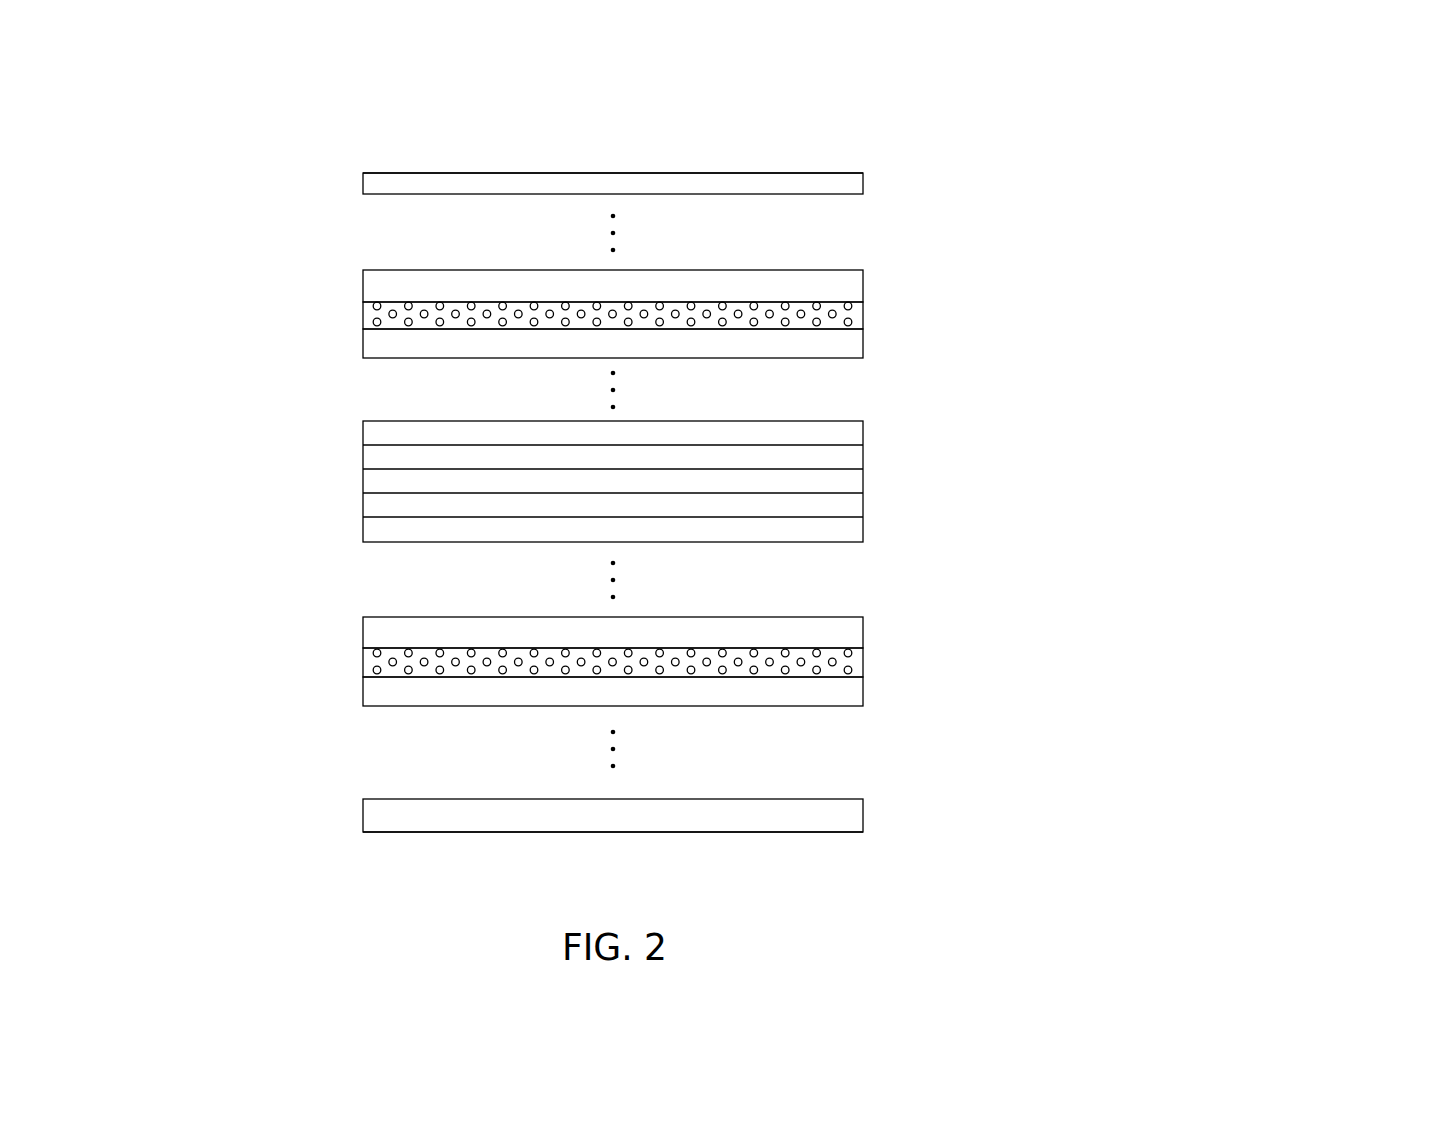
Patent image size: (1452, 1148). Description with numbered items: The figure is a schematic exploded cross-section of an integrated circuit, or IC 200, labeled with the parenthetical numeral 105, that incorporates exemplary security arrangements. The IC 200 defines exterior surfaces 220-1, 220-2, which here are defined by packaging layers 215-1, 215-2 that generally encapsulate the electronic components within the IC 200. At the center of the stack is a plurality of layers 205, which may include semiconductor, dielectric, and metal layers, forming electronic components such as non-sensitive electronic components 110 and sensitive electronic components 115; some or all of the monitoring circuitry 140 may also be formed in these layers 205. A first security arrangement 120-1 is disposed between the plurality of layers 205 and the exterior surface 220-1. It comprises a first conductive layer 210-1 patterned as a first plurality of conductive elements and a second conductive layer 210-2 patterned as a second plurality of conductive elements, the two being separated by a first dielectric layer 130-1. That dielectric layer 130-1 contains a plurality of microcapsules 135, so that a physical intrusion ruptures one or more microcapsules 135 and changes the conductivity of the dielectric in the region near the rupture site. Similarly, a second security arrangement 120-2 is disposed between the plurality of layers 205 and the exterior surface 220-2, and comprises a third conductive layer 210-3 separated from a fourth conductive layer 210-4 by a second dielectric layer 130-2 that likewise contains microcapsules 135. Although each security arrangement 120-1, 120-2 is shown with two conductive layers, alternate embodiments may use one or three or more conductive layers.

The integrated circuit 200 is at (1208, 92).
The secure device 105 is at (785, 505).
The exterior surface 220-1 is at (742, 173).
The packaging layer 215-1 is at (864, 183).
The first security arrangement 120-1 is at (355, 358).
The first conductive layer 210-1 is at (864, 282).
The first dielectric layer 130-1 is at (906, 314).
The microcapsules 135 is at (864, 314).
The second conductive layer 210-2 is at (864, 352).
The plurality of layers 205 is at (836, 483).
The non-sensitive electronic components 110 is at (836, 480).
The sensitive electronic components 115 is at (613, 481).
The monitoring circuitry 140 is at (795, 531).
The second security arrangement 120-2 is at (355, 707).
The third conductive layer 210-3 is at (864, 630).
The second dielectric layer 130-2 is at (864, 662).
The fourth conductive layer 210-4 is at (864, 698).
The packaging layer 215-2 is at (864, 821).
The exterior surface 220-2 is at (753, 832).